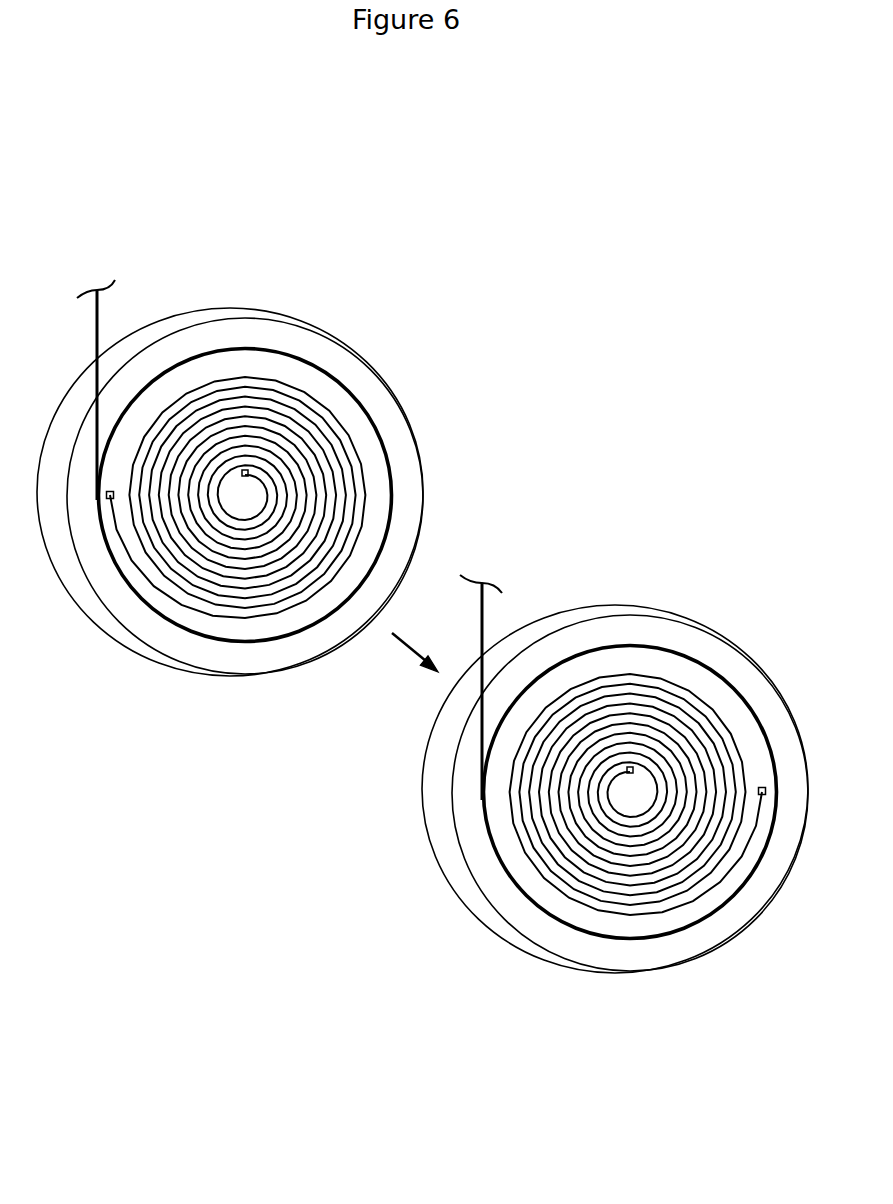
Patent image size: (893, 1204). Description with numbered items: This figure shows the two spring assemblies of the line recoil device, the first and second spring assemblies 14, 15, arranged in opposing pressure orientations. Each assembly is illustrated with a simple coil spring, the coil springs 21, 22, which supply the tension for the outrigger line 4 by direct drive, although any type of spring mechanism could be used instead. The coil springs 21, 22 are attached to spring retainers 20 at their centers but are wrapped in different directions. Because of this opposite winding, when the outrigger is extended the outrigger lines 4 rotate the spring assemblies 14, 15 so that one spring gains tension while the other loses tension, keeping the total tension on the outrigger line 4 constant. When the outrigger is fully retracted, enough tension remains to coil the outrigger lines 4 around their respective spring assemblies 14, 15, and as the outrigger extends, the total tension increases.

The outrigger line 4 is at (97, 308).
The first spring assembly 14 is at (727, 643).
The second spring assembly 15 is at (343, 345).
The spring retainer 20 is at (245, 476).
The coil spring 21 is at (688, 895).
The coil spring 22 is at (325, 587).